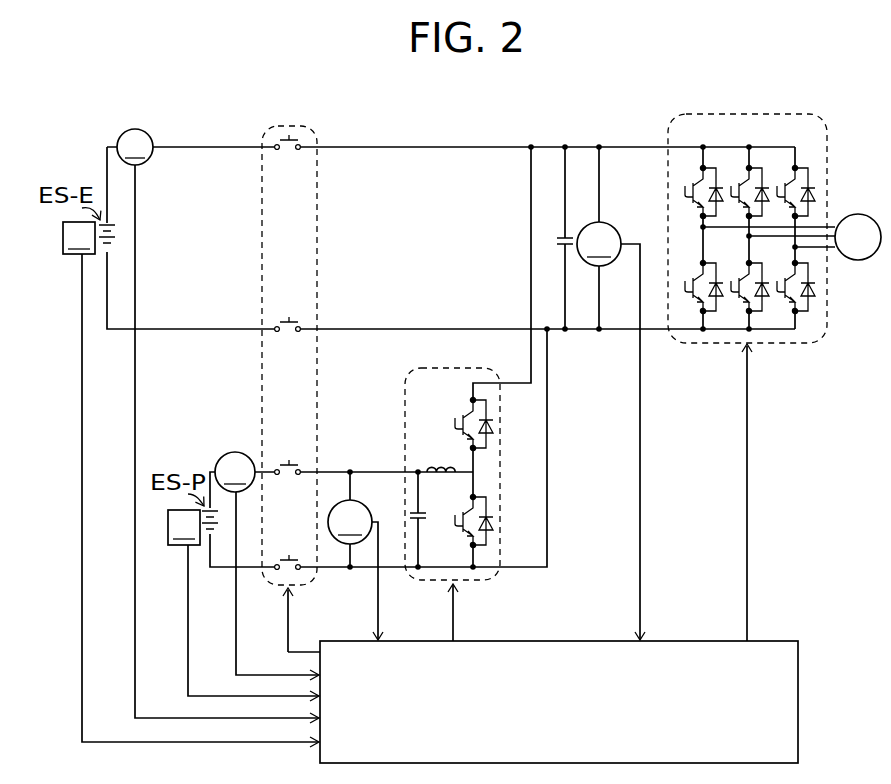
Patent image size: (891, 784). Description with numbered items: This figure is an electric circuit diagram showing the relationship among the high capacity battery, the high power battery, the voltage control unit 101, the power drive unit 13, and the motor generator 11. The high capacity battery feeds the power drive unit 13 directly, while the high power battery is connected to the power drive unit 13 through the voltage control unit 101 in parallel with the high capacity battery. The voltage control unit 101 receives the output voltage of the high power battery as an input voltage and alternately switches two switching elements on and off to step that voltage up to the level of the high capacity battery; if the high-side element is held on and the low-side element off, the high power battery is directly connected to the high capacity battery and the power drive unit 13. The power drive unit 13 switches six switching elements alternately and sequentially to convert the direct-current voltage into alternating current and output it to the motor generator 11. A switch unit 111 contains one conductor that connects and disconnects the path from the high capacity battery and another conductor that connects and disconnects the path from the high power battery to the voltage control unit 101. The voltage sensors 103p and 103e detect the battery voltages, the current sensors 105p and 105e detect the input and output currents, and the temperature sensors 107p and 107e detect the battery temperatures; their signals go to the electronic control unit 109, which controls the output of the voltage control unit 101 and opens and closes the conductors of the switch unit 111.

The current sensor 105e is at (149, 161).
The temperature sensor 107e is at (70, 256).
The voltage sensor 103e is at (614, 227).
The switch unit 111 is at (262, 393).
The voltage control unit 101 is at (405, 406).
The current sensor 105p is at (224, 459).
The voltage sensor 103p is at (388, 497).
The temperature sensor 107p is at (174, 547).
The motor generator 11 is at (857, 261).
The power drive unit 13 is at (800, 343).
The electronic control unit 109 is at (798, 689).